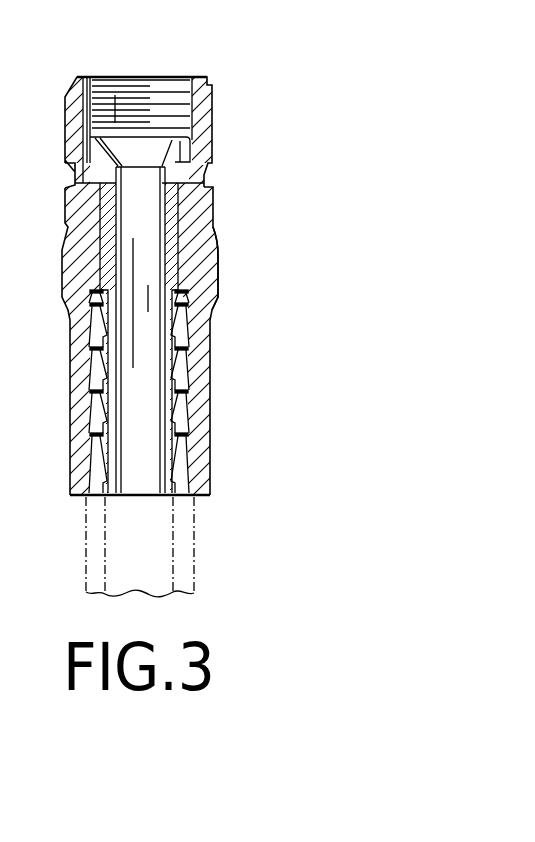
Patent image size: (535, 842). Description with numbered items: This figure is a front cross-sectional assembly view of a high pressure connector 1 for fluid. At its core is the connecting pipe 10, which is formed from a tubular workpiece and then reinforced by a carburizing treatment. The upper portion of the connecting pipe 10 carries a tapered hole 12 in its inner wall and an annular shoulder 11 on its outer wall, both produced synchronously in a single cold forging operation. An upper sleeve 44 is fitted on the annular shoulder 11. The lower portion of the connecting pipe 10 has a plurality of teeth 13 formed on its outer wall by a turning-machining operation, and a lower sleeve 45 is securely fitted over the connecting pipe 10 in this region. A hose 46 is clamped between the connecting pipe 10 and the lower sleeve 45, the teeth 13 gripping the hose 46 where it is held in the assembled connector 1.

The high pressure connector 1 is at (268, 223).
The connecting pipe 10 is at (192, 211).
The annular shoulder 11 is at (198, 148).
The tapered hole 12 is at (163, 167).
The teeth 13 is at (165, 388).
The upper sleeve 44 is at (203, 178).
The lower sleeve 45 is at (216, 273).
The hose 46 is at (185, 545).